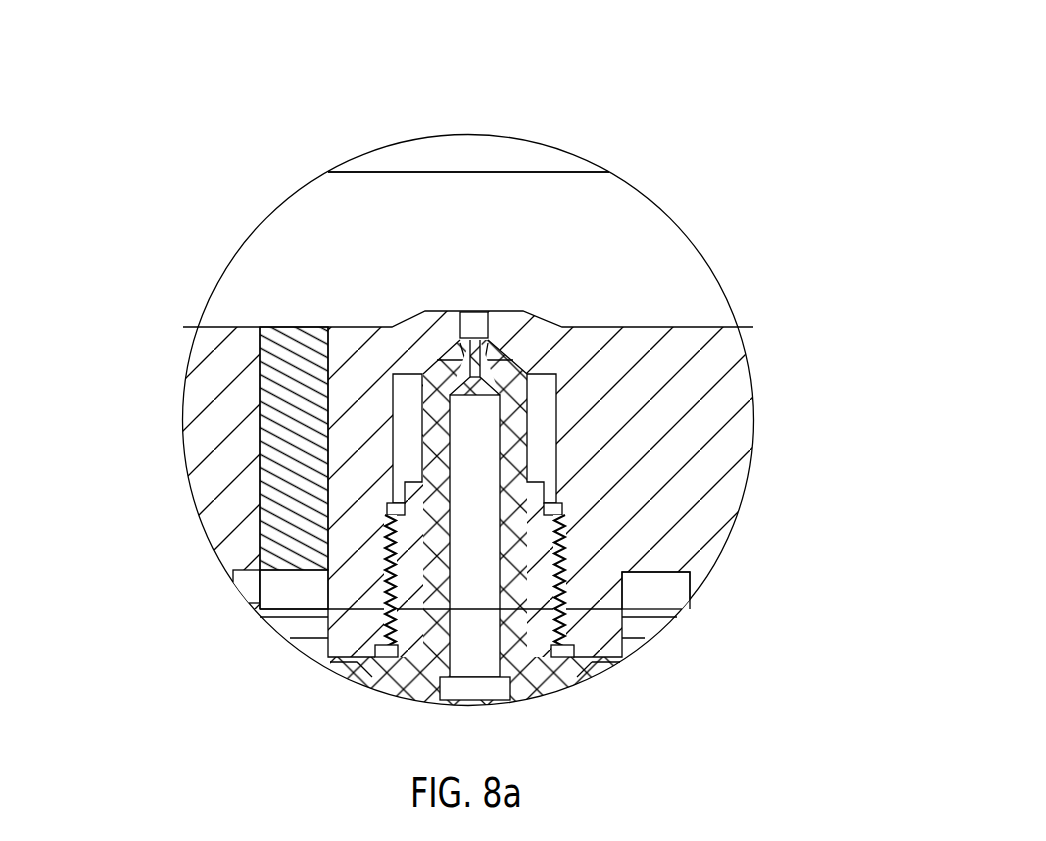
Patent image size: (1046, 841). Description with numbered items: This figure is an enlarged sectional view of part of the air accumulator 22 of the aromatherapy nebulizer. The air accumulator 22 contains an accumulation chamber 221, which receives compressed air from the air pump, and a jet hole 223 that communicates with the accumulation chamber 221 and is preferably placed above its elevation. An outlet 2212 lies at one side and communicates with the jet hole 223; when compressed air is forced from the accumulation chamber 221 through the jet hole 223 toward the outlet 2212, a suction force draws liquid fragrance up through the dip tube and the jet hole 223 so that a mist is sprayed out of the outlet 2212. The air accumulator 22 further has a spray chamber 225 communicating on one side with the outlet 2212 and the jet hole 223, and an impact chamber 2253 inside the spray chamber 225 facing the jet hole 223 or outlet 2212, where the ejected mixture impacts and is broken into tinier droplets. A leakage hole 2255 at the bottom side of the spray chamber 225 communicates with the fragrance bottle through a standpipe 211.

The spray chamber 225 is at (420, 213).
The impact chamber 2253 is at (477, 150).
The outlet 2212 is at (470, 327).
The jet hole 223 is at (518, 311).
The leakage hole 2255 is at (295, 328).
The accumulation chamber 221 is at (408, 425).
The air accumulator 22 is at (557, 459).
The standpipe 211 is at (293, 570).